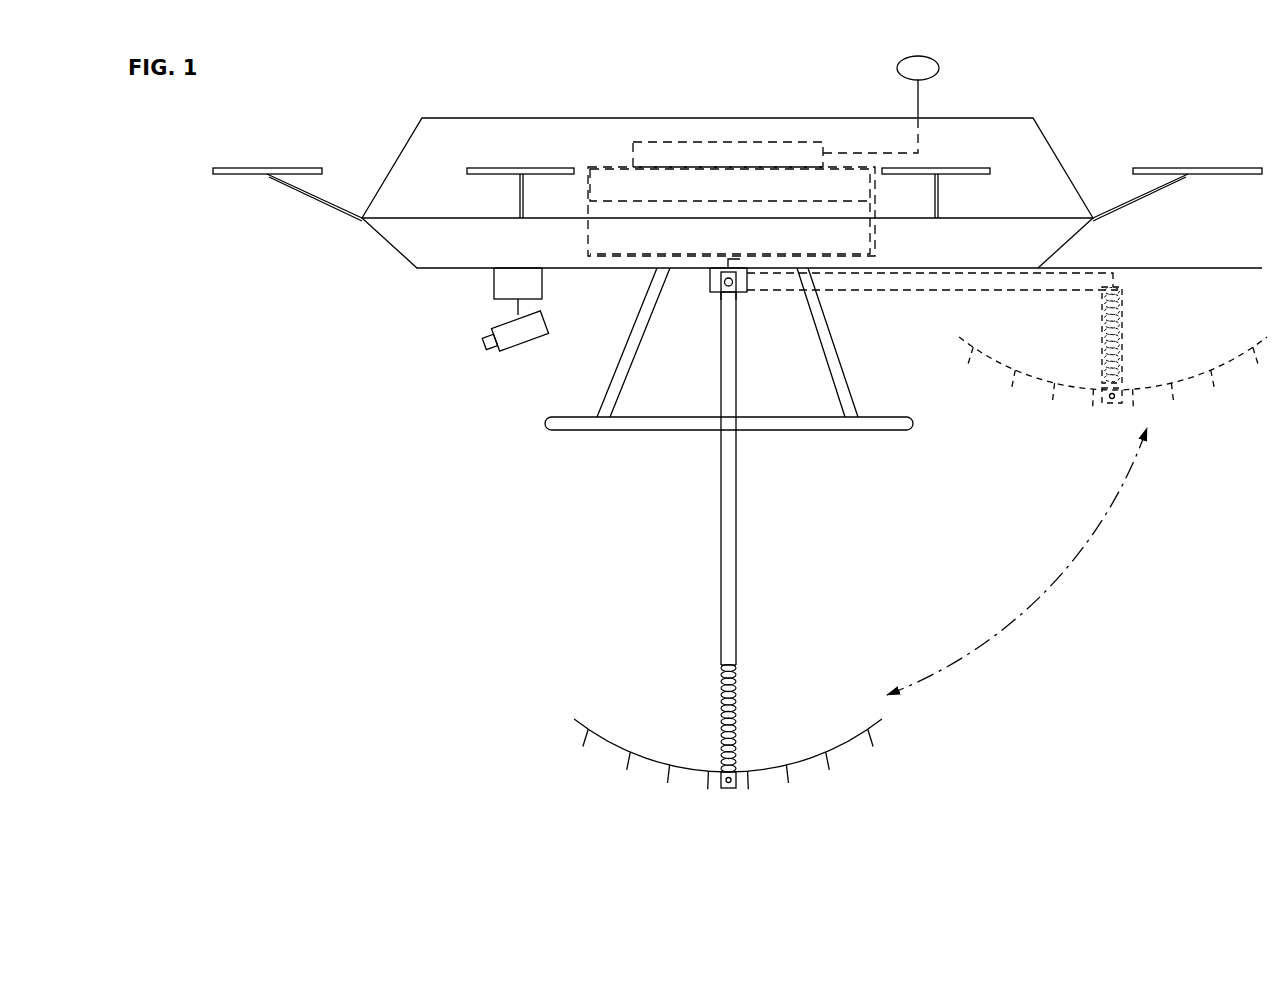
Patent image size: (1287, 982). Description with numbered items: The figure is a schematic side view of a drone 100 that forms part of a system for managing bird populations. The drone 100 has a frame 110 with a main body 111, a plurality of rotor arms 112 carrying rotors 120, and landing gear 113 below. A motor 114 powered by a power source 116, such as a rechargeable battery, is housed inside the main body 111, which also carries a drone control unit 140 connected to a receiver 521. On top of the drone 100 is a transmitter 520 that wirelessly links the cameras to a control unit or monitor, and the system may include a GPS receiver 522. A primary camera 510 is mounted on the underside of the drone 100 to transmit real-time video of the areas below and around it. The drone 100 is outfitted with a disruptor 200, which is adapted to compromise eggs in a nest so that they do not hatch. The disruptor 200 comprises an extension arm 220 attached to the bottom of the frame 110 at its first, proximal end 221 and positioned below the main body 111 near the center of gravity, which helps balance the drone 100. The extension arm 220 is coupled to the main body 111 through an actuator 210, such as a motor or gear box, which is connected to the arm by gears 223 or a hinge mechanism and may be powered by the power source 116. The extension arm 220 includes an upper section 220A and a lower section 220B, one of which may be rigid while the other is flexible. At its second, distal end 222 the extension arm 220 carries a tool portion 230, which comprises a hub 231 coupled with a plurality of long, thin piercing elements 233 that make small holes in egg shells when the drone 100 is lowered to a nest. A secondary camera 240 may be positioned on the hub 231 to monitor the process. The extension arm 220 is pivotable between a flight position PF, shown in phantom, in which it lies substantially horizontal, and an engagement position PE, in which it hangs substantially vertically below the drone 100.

The drone 100 is at (617, 117).
The frame 110 is at (712, 130).
The main body 111 is at (800, 133).
The motor 114 is at (828, 238).
The power source 116 is at (823, 187).
The drone control unit 140 is at (660, 141).
The rotors 120 is at (240, 167).
The rotor arms 112 is at (315, 197).
The landing gear 113 is at (555, 423).
The disruptor 200 is at (565, 600).
The actuator 210 is at (690, 287).
The first (proximal) end 221 is at (730, 302).
The gears 223 is at (722, 285).
The extension arm 220 is at (725, 532).
The upper section 220A is at (730, 483).
The lower section 220B is at (737, 677).
The second (distal) end 222 is at (735, 767).
The tool portion 230 is at (732, 798).
The hub 231 is at (805, 765).
The piercing elements 233 is at (587, 747).
The camera 240 is at (725, 787).
The primary camera 510 is at (490, 330).
The transmitter 520 is at (932, 57).
The receiver 521 is at (937, 63).
The GPS receiver 522 is at (940, 68).
The engagement position PE is at (903, 720).
The flight position PF is at (1166, 423).